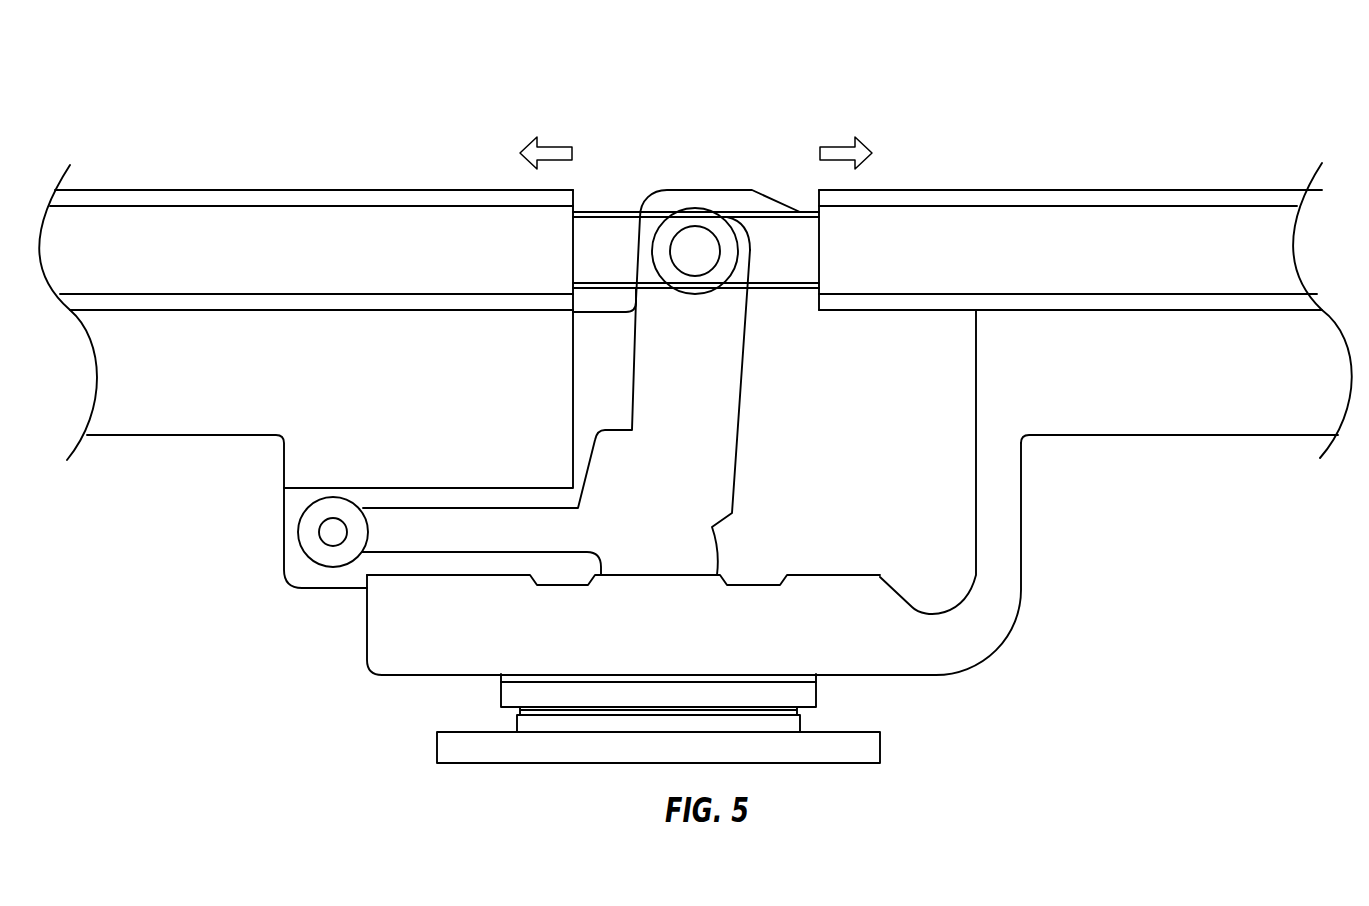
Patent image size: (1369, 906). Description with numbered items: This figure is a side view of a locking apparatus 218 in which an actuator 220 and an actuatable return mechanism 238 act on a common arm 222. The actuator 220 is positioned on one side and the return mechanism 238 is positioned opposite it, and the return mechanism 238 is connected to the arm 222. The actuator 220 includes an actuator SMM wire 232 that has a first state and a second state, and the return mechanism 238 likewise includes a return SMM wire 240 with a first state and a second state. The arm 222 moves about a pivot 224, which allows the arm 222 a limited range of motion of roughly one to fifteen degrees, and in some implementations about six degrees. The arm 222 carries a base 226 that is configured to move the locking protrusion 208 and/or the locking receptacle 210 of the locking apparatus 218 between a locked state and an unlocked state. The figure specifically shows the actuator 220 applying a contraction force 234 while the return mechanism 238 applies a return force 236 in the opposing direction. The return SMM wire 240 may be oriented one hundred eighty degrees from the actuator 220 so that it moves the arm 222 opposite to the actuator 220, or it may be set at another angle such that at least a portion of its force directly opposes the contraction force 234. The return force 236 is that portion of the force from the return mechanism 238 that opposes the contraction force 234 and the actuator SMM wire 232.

The locking protrusion 208 is at (880, 740).
The locking receptacle 210 is at (816, 695).
The locking apparatus 218 is at (1178, 112).
The actuator 220 is at (312, 190).
The arm 222 is at (722, 418).
The pivot 224 is at (332, 531).
The base 226 is at (717, 563).
The actuator SMM wire 232 is at (640, 210).
The contraction force 234 is at (564, 143).
The return force 236 is at (828, 145).
The return mechanism 238 is at (1188, 190).
The return SMM wire 240 is at (750, 210).